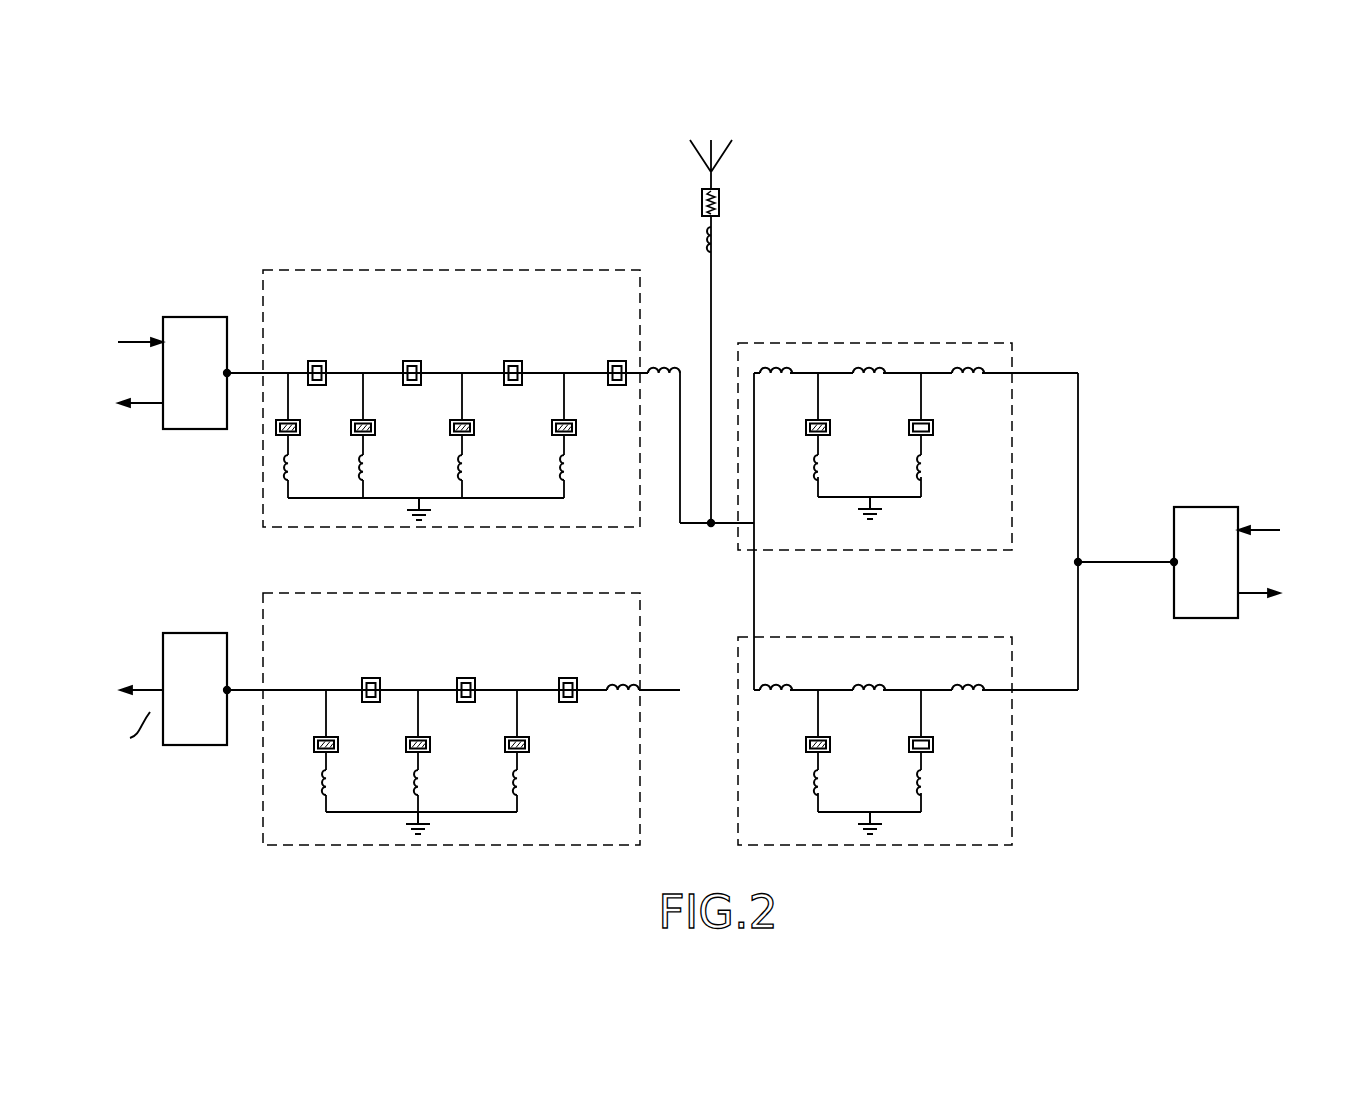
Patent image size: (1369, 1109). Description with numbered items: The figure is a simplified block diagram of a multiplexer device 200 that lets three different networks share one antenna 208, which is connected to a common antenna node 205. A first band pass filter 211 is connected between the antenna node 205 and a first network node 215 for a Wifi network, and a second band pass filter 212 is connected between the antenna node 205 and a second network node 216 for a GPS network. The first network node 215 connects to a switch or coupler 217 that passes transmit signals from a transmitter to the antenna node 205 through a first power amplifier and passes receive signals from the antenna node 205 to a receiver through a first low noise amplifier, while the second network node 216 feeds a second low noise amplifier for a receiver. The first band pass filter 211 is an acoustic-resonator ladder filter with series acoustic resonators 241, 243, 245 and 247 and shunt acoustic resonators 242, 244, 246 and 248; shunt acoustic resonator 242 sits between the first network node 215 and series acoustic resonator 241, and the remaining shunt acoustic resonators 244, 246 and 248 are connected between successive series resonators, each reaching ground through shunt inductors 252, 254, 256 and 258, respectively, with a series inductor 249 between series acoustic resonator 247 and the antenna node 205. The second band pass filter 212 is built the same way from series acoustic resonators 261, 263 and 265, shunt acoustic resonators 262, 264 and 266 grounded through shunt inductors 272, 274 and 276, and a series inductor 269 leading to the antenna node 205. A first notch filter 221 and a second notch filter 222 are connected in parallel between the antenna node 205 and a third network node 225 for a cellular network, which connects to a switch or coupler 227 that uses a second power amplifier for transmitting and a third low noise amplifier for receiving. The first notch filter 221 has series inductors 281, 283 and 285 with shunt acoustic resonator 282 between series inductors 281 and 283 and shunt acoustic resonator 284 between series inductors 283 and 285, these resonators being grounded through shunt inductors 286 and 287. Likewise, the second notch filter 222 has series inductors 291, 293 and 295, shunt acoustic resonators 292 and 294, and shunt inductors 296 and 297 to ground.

The multiplexer device 200 is at (878, 211).
The antenna node 205 is at (712, 536).
The antenna 208 is at (700, 148).
The first band pass filter 211 is at (468, 268).
The second band pass filter 212 is at (262, 818).
The first network node 215 is at (229, 371).
The second network node 216 is at (229, 688).
The switch or coupler 217 is at (176, 431).
The first notch filter 221 is at (1013, 356).
The second notch filter 222 is at (1013, 820).
The third network node 225 is at (1077, 561).
The switch or coupler 227 is at (1195, 621).
The series acoustic resonator 241 is at (316, 361).
The shunt acoustic resonator 242 is at (277, 434).
The series acoustic resonator 243 is at (413, 361).
The shunt acoustic resonator 244 is at (376, 428).
The series acoustic resonator 245 is at (514, 361).
The shunt acoustic resonator 246 is at (475, 428).
The series acoustic resonator 247 is at (616, 361).
The shunt acoustic resonator 248 is at (577, 428).
The series inductor 249 is at (665, 370).
The shunt inductor 252 is at (292, 468).
The shunt inductor 254 is at (367, 468).
The shunt inductor 256 is at (466, 468).
The shunt inductor 258 is at (568, 468).
The series acoustic resonator 261 is at (372, 678).
The shunt acoustic resonator 262 is at (318, 740).
The series acoustic resonator 263 is at (467, 678).
The shunt acoustic resonator 264 is at (431, 744).
The series acoustic resonator 265 is at (570, 678).
The shunt acoustic resonator 266 is at (530, 744).
The series inductor 269 is at (620, 696).
The shunt inductor 272 is at (330, 783).
The shunt inductor 274 is at (422, 783).
The shunt inductor 276 is at (521, 783).
The series inductor 281 is at (966, 368).
The shunt acoustic resonator 282 is at (933, 428).
The series inductor 283 is at (873, 368).
The shunt acoustic resonator 284 is at (806, 428).
The series inductor 285 is at (770, 368).
The shunt inductor 286 is at (826, 468).
The shunt inductor 287 is at (925, 480).
The series inductor 291 is at (968, 688).
The shunt acoustic resonator 292 is at (933, 745).
The series inductor 293 is at (870, 688).
The shunt acoustic resonator 294 is at (806, 745).
The series inductor 295 is at (772, 688).
The shunt inductor 296 is at (925, 790).
The shunt inductor 297 is at (815, 785).